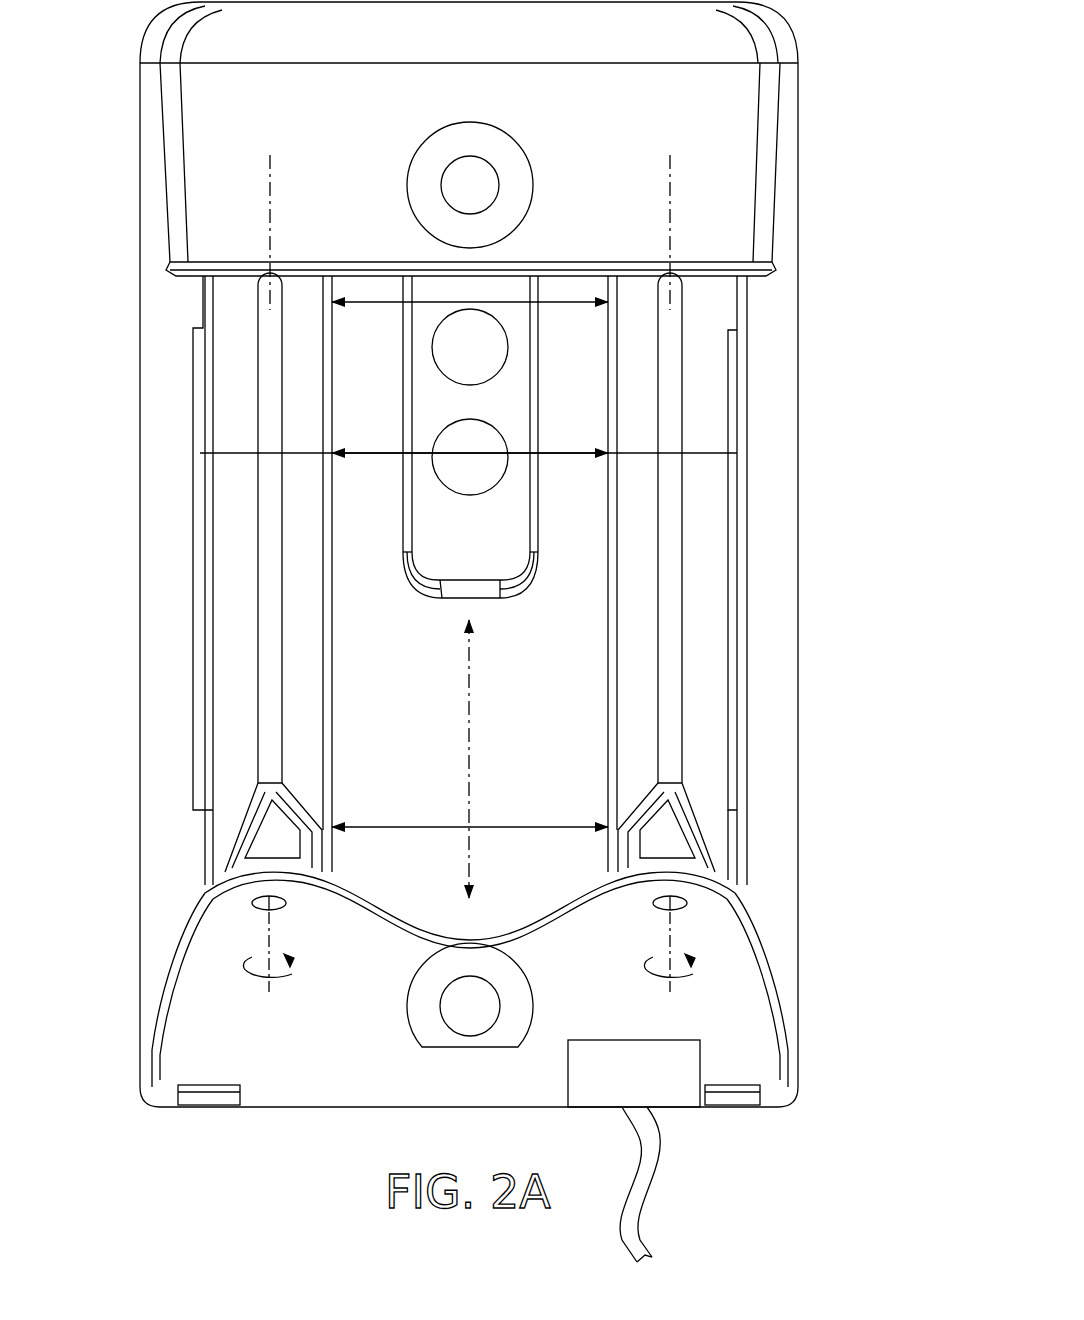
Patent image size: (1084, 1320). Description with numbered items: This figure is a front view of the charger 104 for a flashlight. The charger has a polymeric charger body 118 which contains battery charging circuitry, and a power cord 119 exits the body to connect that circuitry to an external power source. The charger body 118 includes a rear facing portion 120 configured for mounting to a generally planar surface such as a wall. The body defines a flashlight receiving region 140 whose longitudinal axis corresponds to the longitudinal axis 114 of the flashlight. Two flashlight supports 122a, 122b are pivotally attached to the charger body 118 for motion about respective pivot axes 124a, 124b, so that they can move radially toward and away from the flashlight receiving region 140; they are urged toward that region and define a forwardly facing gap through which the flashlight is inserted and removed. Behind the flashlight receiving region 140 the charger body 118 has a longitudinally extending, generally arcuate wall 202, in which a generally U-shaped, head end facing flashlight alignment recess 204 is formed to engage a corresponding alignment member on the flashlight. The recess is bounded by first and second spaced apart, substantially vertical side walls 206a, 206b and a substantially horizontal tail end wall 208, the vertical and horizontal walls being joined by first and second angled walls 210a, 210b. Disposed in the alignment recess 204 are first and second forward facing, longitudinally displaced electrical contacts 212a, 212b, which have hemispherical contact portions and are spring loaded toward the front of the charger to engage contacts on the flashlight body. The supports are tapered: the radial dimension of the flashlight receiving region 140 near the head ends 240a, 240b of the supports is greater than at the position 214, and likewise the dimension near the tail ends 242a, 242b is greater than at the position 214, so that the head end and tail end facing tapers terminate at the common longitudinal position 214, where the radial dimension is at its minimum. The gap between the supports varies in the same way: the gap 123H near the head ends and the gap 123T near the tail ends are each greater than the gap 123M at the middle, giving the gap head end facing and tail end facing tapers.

The charger 104 is at (838, 222).
The charger body 118 is at (805, 572).
The power cord 119 is at (637, 1223).
The rear facing portion 120 is at (424, 51).
The flashlight support 122a is at (735, 357).
The flashlight support 122b is at (215, 654).
The gap at head end location 123H is at (506, 298).
The gap at middle location 123M is at (553, 468).
The gap at tail end location 123T is at (480, 830).
The pivot axis 124a is at (650, 968).
The pivot axis 124b is at (290, 968).
The longitudinal axis 114 is at (467, 712).
The flashlight receiving region 140 is at (350, 195).
The arcuate wall 202 is at (565, 680).
The flashlight alignment recess 204 is at (502, 548).
The first side wall 206a is at (538, 503).
The second side wall 206b is at (403, 502).
The tail end wall 208 is at (448, 600).
The first angled wall 210a is at (536, 580).
The second angled wall 210b is at (404, 586).
The first electrical contact 212a is at (428, 347).
The second electrical contact 212b is at (428, 457).
The common longitudinal position 214 is at (233, 458).
The head end of flashlight support 240a is at (598, 300).
The head end of flashlight support 240b is at (343, 300).
The tail end of flashlight support 242a is at (616, 788).
The tail end of flashlight support 242b is at (324, 788).